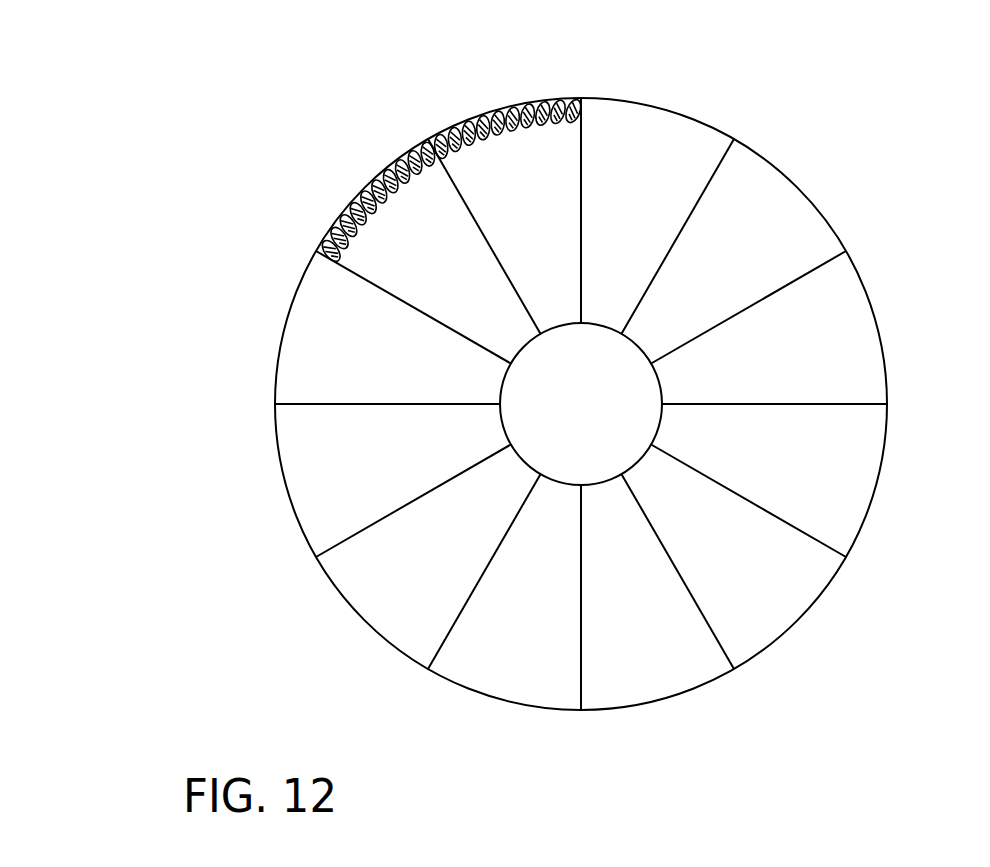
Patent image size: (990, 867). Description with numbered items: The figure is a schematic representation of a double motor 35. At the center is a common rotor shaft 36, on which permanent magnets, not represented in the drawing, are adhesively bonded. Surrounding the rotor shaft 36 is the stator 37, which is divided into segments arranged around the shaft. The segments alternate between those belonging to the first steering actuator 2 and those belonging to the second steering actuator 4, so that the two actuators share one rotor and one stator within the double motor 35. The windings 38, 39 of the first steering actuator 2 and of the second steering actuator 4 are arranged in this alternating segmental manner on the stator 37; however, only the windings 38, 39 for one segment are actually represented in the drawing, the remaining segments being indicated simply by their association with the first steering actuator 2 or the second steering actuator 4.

The double motor 35 is at (810, 108).
The common rotor shaft 36 is at (629, 382).
The stator 37 is at (292, 307).
The winding 38 is at (377, 190).
The winding 39 is at (475, 128).
The first steering actuator 2 is at (581, 406).
The second steering actuator 4 is at (581, 404).